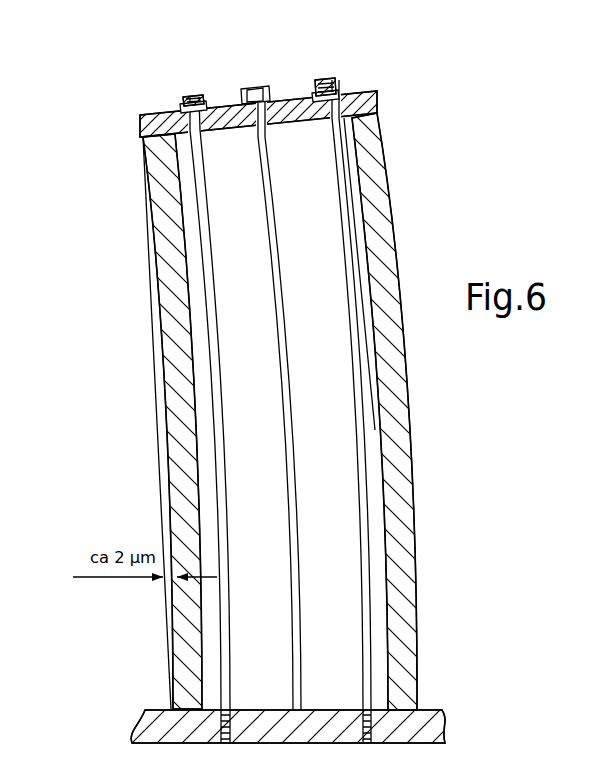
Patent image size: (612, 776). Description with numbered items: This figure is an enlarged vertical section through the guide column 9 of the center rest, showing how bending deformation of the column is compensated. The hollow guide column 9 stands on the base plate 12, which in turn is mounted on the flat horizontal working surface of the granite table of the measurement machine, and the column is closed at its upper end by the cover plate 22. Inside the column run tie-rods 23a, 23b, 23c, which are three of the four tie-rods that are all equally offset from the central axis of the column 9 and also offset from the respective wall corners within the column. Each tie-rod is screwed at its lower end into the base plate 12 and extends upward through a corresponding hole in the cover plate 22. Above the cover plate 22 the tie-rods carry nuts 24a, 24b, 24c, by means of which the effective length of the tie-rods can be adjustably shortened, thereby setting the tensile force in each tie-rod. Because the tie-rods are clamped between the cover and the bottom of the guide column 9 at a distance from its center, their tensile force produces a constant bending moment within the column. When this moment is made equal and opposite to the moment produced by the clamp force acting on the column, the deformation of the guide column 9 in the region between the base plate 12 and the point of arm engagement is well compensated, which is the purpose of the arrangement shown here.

The guide column 9 is at (415, 488).
The base plate 12 is at (421, 727).
The cover plate 22 is at (360, 88).
The tie-rod 23a is at (210, 246).
The tie-rod 23b is at (249, 89).
The tie-rod 23c is at (337, 192).
The nut 24a is at (181, 107).
The nut 24b is at (268, 89).
The nut 24c is at (313, 80).